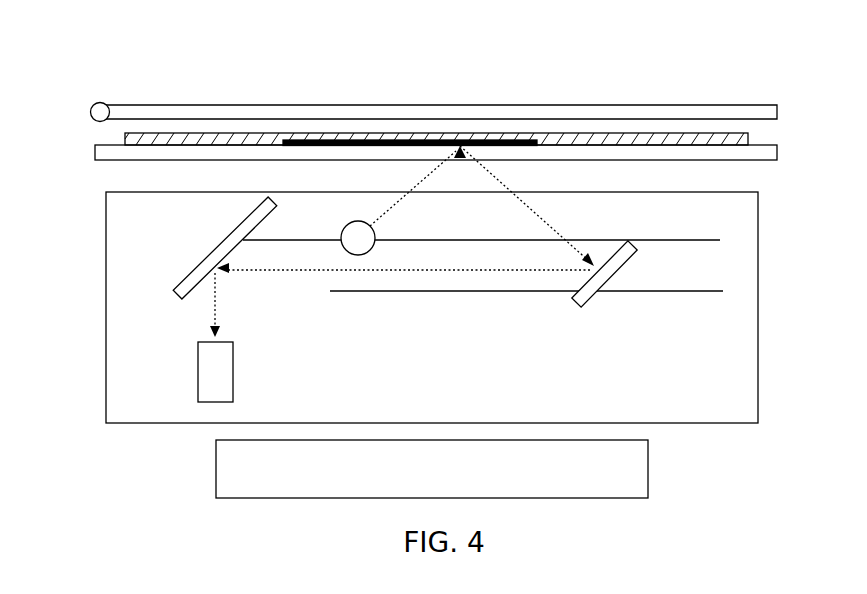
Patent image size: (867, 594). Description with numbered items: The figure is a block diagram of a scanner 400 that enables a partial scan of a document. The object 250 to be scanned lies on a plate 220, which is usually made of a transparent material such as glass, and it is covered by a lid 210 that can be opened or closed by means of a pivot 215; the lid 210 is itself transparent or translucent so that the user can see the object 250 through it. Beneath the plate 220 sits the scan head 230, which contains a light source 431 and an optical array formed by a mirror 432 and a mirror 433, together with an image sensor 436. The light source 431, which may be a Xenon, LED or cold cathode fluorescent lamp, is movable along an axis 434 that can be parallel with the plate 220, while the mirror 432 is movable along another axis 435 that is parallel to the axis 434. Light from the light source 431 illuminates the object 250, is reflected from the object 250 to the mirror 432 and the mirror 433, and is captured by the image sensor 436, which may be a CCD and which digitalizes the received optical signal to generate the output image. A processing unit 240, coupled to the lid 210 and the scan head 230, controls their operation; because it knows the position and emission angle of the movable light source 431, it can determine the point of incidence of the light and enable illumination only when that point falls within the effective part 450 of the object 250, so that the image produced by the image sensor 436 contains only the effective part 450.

The scanner 400 is at (434, 263).
The lid 210 is at (780, 105).
The pivot 215 is at (92, 103).
The plate 220 is at (780, 147).
The object 250 is at (543, 133).
The effective part 450 is at (370, 135).
The scan head 230 is at (759, 287).
The light source 431 is at (341, 232).
The mirror 432 is at (590, 300).
The mirror 433 is at (228, 235).
The axis 434 is at (482, 226).
The axis 435 is at (527, 277).
The image sensor 436 is at (235, 375).
The processing unit 240 is at (650, 468).